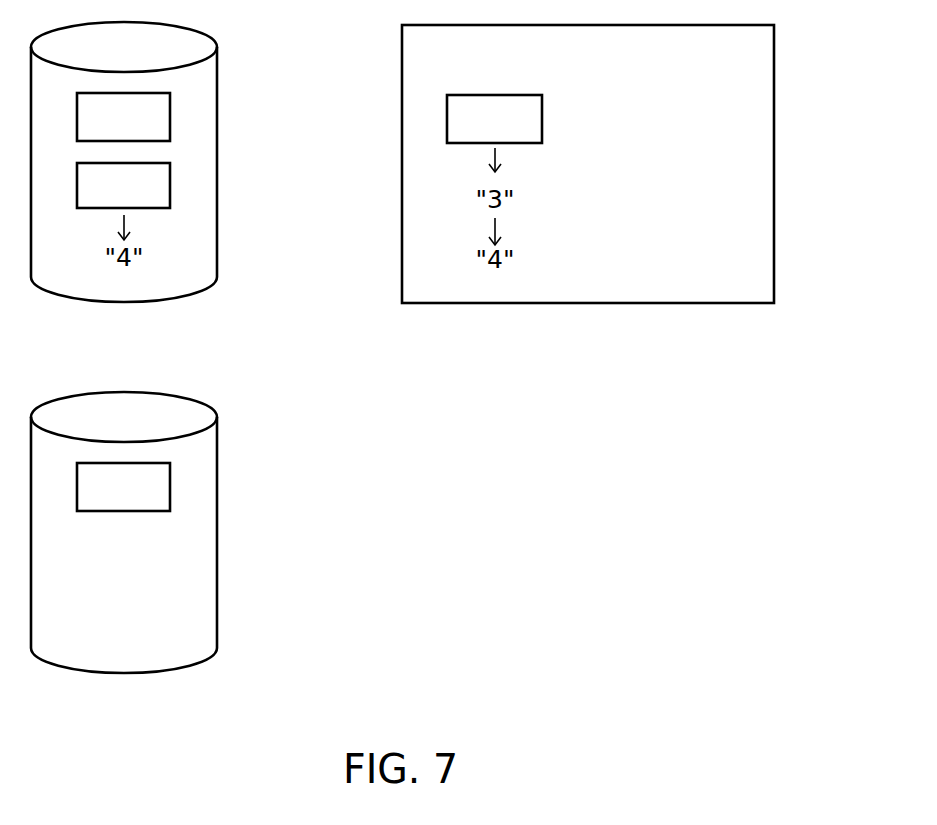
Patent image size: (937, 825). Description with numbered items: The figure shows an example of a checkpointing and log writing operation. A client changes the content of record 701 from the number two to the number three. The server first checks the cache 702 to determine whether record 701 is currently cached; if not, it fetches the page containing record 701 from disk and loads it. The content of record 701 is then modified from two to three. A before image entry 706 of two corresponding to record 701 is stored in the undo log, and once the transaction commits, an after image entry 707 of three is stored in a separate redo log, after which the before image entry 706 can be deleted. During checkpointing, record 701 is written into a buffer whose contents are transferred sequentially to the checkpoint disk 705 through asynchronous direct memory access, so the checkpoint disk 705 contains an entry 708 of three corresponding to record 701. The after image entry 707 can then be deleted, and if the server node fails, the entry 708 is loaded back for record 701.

The record 701 is at (542, 113).
The cache 702 is at (774, 157).
The checkpoint disk 705 is at (217, 622).
The before image entry 706 is at (170, 113).
The after image entry 707 is at (170, 181).
The entry 708 is at (170, 484).